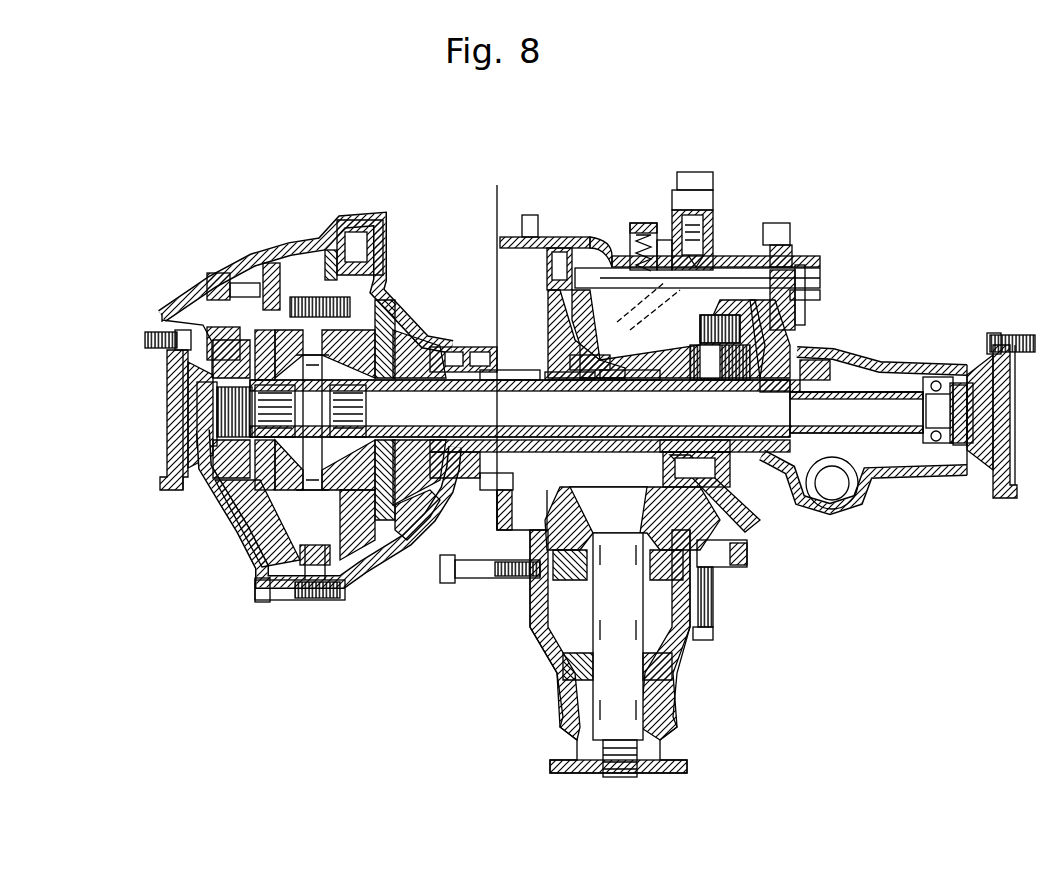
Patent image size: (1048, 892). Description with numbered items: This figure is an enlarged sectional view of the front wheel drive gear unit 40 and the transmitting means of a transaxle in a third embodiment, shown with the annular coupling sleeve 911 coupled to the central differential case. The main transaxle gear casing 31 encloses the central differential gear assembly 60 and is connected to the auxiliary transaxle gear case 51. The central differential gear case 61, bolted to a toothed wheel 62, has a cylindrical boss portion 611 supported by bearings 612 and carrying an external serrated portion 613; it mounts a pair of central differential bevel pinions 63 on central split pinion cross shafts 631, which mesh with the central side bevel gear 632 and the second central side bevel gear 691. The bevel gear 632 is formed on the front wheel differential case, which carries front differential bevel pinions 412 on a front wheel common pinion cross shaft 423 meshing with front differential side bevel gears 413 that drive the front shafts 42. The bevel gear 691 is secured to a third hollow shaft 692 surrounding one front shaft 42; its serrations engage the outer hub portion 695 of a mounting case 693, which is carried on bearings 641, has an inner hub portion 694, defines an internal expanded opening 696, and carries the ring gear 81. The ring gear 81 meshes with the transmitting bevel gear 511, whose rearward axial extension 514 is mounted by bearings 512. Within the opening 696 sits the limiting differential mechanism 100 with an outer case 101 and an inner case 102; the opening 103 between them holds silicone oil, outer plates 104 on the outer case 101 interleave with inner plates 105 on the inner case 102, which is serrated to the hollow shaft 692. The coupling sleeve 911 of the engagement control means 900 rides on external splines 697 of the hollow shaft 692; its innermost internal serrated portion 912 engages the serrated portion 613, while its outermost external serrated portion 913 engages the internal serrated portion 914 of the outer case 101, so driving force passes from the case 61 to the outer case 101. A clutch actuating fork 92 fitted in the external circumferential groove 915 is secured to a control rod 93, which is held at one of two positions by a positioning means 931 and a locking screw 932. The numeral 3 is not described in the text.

The main transaxle gear casing 31 is at (215, 490).
The front wheel differential gear unit 40 is at (395, 520).
The front shafts 42 is at (200, 425).
The auxiliary transaxle gear case 51 is at (760, 258).
The central differential gear assembly 60 is at (425, 330).
The central differential gear case 61 is at (383, 268).
The toothed wheel 62 is at (300, 600).
The central differential bevel pinions 63 is at (420, 560).
The ring gear 81 is at (712, 300).
The clutch actuating fork 92 is at (600, 270).
The control rod 93 is at (612, 270).
The limiting differential mechanism 100 is at (735, 495).
The outer case 101 is at (650, 388).
The inner case 102 is at (725, 380).
The opening 103 is at (810, 398).
The outer plates 104 is at (690, 392).
The inner plates 105 is at (770, 435).
The front differential bevel pinions 412 is at (250, 500).
The front differential side bevel gears 413 is at (245, 395).
The front wheel common pinion cross shaft 423 is at (300, 490).
The transmitting bevel gear 511 is at (720, 567).
The bearings 512 is at (715, 595).
The rearward axial extension 514 is at (640, 630).
The cylindrical boss portion 611 is at (468, 348).
The bearings 612 is at (453, 345).
The external serrated portion 613 is at (497, 290).
The central split pinion cross shafts 631 is at (392, 560).
The central side bevel gear 632 is at (338, 580).
The bearings 641 is at (815, 352).
The central side bevel gear 691 is at (586, 408).
The third hollow shaft 692 is at (512, 391).
The mounting case 693 is at (795, 318).
The inner hub portion 694 is at (662, 265).
The outer hub portion 695 is at (860, 356).
The internal expanded opening 696 is at (780, 290).
The external splines 697 is at (556, 380).
The engagement control means 900 is at (528, 236).
The annular coupling sleeve 911 is at (555, 375).
The innermost internal serrated portion 912 is at (560, 355).
The outermost external serrated portion 913 is at (640, 388).
The internal serrated portion 914 is at (740, 520).
The external circumferential groove 915 is at (483, 478).
The positioning means 931 is at (627, 265).
The locking screw 932 is at (690, 255).
The wheel flange 3 is at (994, 415).